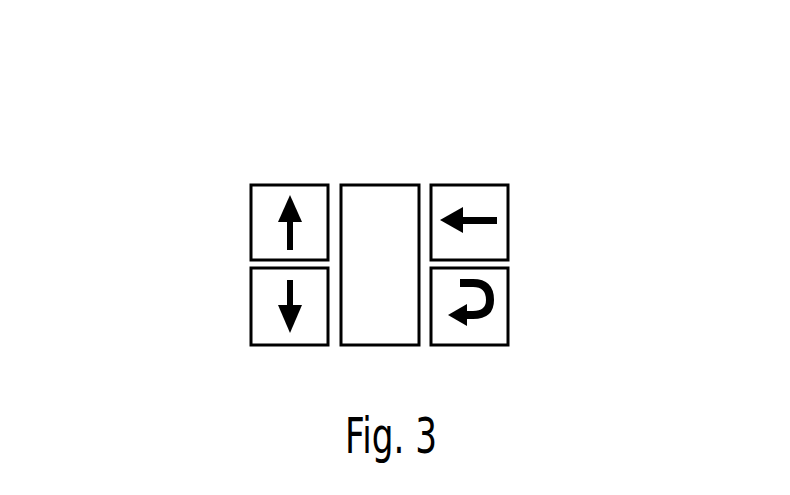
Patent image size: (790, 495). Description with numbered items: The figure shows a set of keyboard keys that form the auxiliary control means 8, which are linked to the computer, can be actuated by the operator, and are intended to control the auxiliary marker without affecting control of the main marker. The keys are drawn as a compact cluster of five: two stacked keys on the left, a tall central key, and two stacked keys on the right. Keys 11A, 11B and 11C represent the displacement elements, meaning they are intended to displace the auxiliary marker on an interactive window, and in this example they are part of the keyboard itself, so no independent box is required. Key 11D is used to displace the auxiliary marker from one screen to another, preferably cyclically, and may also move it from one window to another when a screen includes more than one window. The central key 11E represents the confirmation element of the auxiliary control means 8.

The auxiliary control means 8 is at (253, 158).
The key 11A is at (253, 228).
The key 11B is at (253, 303).
The key 11C is at (510, 210).
The key 11D is at (510, 303).
The key 11E is at (383, 183).